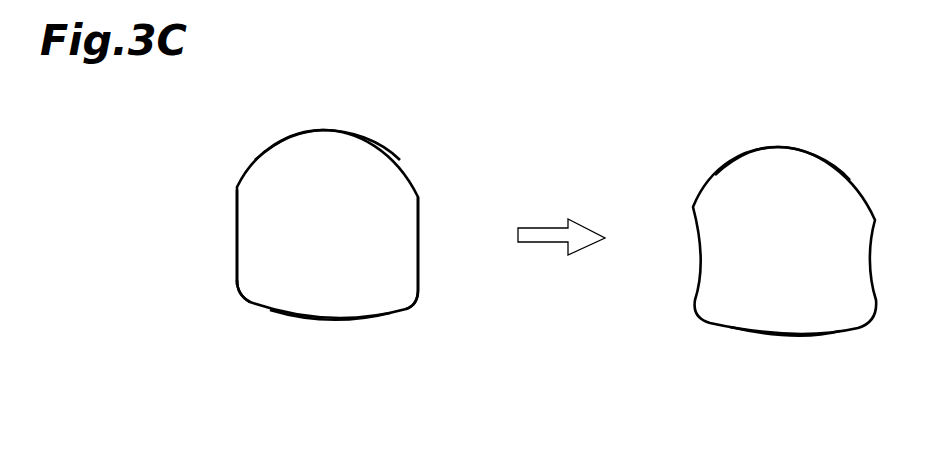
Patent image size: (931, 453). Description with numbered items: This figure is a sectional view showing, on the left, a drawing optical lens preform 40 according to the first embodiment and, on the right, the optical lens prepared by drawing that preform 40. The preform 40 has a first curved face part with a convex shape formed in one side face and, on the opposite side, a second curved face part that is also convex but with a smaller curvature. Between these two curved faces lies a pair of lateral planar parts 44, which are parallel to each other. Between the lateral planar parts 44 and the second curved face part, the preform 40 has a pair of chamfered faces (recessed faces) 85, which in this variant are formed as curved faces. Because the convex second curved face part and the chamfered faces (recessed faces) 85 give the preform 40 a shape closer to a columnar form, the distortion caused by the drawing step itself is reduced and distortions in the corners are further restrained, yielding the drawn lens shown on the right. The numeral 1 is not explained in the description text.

The drawing optical lens preform 40 is at (416, 108).
The lateral planar parts 44 is at (237, 194).
The chamfered faces (recessed faces) 85 is at (251, 302).
The container 1 is at (873, 127).